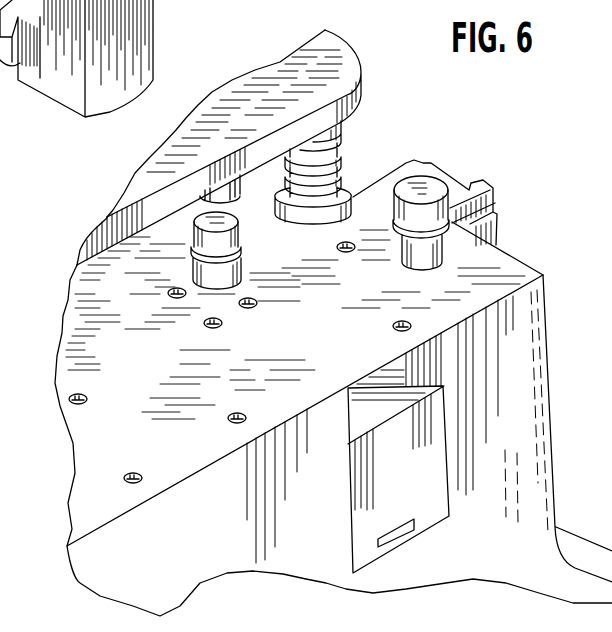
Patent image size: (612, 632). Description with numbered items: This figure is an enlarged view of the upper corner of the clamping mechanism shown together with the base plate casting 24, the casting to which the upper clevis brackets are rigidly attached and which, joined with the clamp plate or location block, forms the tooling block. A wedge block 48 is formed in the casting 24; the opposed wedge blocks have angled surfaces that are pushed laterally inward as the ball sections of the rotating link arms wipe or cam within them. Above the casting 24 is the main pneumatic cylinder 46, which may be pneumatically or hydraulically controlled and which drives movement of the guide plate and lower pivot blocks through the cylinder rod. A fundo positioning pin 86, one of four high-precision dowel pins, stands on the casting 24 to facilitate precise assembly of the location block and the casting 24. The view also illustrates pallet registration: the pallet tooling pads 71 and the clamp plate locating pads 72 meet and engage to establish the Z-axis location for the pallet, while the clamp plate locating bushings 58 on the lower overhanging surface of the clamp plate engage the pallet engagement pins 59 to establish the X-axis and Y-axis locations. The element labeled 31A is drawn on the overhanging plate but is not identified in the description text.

The main pneumatic cylinder 46 is at (143, 10).
The top plate 31A is at (334, 53).
The clamp plate locating pads 72 is at (200, 221).
The clamp plate locating bushings 58 is at (339, 133).
The pallet engagement pins 59 is at (343, 197).
The fundo positioning pins 86 is at (434, 184).
The pallet tooling pads 71 is at (208, 272).
The base plate casting 24 is at (333, 419).
The wedge block 48 is at (416, 476).